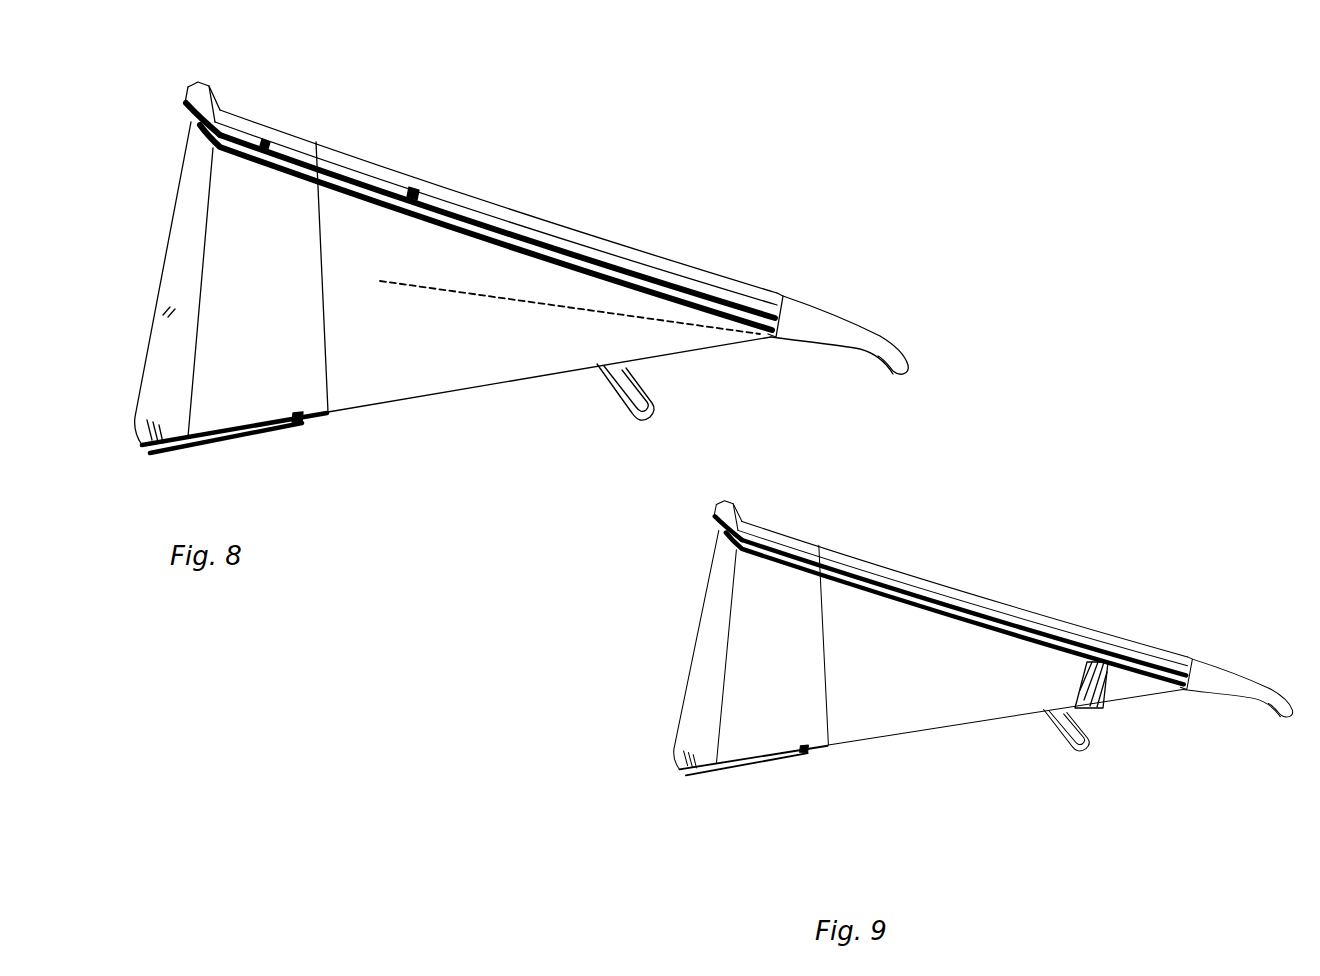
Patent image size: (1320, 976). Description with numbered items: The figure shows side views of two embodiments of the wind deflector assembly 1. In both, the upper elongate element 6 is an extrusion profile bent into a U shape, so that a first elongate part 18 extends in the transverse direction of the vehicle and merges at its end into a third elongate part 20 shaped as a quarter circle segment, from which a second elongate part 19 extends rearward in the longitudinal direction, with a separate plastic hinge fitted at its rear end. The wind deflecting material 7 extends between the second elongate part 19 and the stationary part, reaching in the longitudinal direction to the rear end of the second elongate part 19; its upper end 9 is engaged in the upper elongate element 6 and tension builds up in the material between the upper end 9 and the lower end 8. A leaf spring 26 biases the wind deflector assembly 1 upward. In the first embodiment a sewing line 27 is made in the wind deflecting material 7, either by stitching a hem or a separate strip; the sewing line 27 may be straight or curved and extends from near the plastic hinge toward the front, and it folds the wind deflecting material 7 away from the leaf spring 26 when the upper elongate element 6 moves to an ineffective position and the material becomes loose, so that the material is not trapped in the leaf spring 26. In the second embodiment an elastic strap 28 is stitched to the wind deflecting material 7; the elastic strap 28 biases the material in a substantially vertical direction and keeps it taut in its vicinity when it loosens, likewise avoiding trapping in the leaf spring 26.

In FIG. 8, the wind deflector assembly 1 is at (470, 286).
In FIG. 8, the upper elongate element 6 is at (486, 199).
In FIG. 8, the wind deflecting material 7 is at (170, 310).
In FIG. 9, the wind deflecting material 7 is at (885, 714).
In FIG. 8, the lower end 8 is at (145, 447).
In FIG. 8, the upper end 9 is at (181, 130).
In FIG. 8, the first elongate part 18 is at (190, 97).
In FIG. 8, the second elongate part 19 is at (412, 186).
In FIG. 8, the third elongate part 20 is at (267, 145).
In FIG. 8, the leaf spring 26 is at (650, 388).
In FIG. 9, the leaf spring 26 is at (1092, 752).
In FIG. 8, the sewing line 27 is at (577, 305).
In FIG. 9, the elastic strap 28 is at (1112, 660).